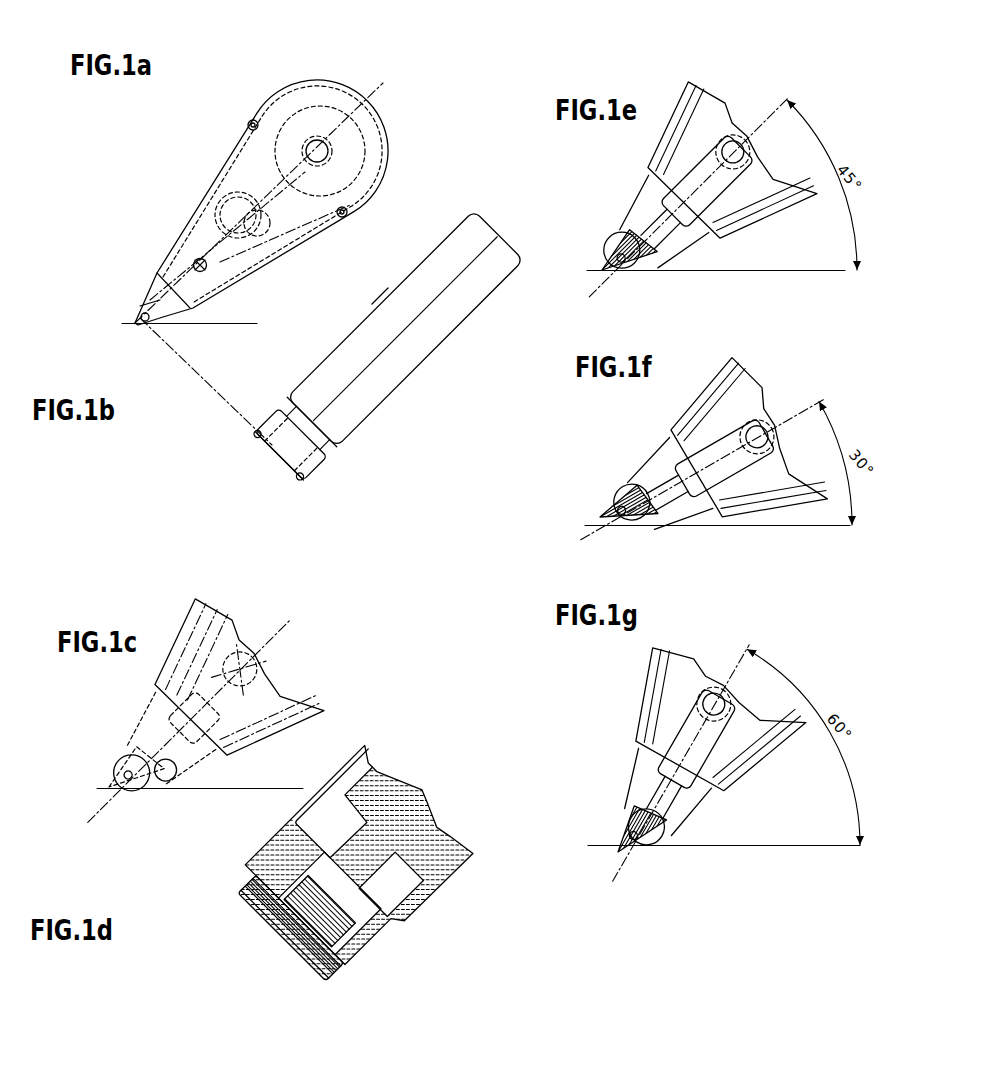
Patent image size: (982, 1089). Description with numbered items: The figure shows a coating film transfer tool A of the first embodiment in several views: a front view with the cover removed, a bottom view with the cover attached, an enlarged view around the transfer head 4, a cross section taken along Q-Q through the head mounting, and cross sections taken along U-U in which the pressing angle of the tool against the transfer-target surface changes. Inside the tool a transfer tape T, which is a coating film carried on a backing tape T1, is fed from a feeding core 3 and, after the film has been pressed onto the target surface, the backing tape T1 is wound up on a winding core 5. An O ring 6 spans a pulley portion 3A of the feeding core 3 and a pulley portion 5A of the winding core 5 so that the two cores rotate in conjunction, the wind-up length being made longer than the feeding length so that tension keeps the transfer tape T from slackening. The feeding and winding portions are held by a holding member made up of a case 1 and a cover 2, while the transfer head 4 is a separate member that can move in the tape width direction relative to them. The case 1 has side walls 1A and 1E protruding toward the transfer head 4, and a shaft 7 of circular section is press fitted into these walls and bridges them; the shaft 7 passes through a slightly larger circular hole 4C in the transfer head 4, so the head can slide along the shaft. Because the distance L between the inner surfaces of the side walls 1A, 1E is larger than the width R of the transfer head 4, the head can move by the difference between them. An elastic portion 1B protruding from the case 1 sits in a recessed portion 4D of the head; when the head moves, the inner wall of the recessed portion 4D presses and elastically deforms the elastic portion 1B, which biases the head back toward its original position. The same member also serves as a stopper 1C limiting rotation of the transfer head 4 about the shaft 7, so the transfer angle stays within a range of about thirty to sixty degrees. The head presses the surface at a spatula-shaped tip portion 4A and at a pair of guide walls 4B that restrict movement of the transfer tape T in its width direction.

In FIG. 1B, the case 1 is at (403, 387).
In FIG. 1B, the side wall 1A is at (317, 470).
In FIG. 1D, the side wall 1A is at (347, 970).
In FIG. 1D, the elastic portion 1B is at (327, 907).
In FIG. 1E, the elastic portion 1B is at (668, 235).
In FIG. 1F, the elastic portion 1B is at (672, 500).
In FIG. 1G, the elastic portion 1B is at (670, 800).
In FIG. 1D, the stopper 1C is at (323, 885).
In FIG. 1E, the stopper 1C is at (706, 263).
In FIG. 1F, the stopper 1C is at (714, 535).
In FIG. 1G, the stopper 1C is at (723, 846).
In FIG. 1B, the side wall 1E is at (270, 413).
In FIG. 1D, the side wall 1E is at (247, 878).
In FIG. 1A, the cover 2 is at (378, 300).
In FIG. 1A, the feeding core 3 is at (350, 155).
In FIG. 1A, the pulley portion 3A is at (357, 185).
In FIG. 1A, the transfer head 4 is at (138, 308).
In FIG. 1C, the tip portion 4A is at (110, 788).
In FIG. 1B, the guide walls 4B is at (258, 433).
In FIG. 1C, the guide walls 4B is at (162, 788).
In FIG. 1D, the hole 4C is at (267, 927).
In FIG. 1D, the recessed portion 4D is at (307, 913).
In FIG. 1E, the recessed portion 4D is at (633, 230).
In FIG. 1F, the recessed portion 4D is at (637, 485).
In FIG. 1G, the recessed portion 4D is at (636, 804).
In FIG. 1A, the winding core 5 is at (235, 212).
In FIG. 1A, the pulley portion 5A is at (257, 238).
In FIG. 1A, the O ring 6 is at (250, 167).
In FIG. 1B, the shaft 7 is at (258, 442).
In FIG. 1D, the shaft 7 is at (250, 900).
In FIG. 1A, the coating film transfer tool A is at (262, 75).
In FIG. 1A, the transfer tape T is at (288, 235).
In FIG. 1A, the backing tape T1 is at (203, 232).
In FIG. 1B, the section line U- U is at (332, 398).
In FIG. 1C, the section line Q- Q is at (270, 640).
In FIG. 1D, the width of the transfer head R is at (299, 968).
In FIG. 1D, the distance between side wall inner surfaces L is at (318, 974).